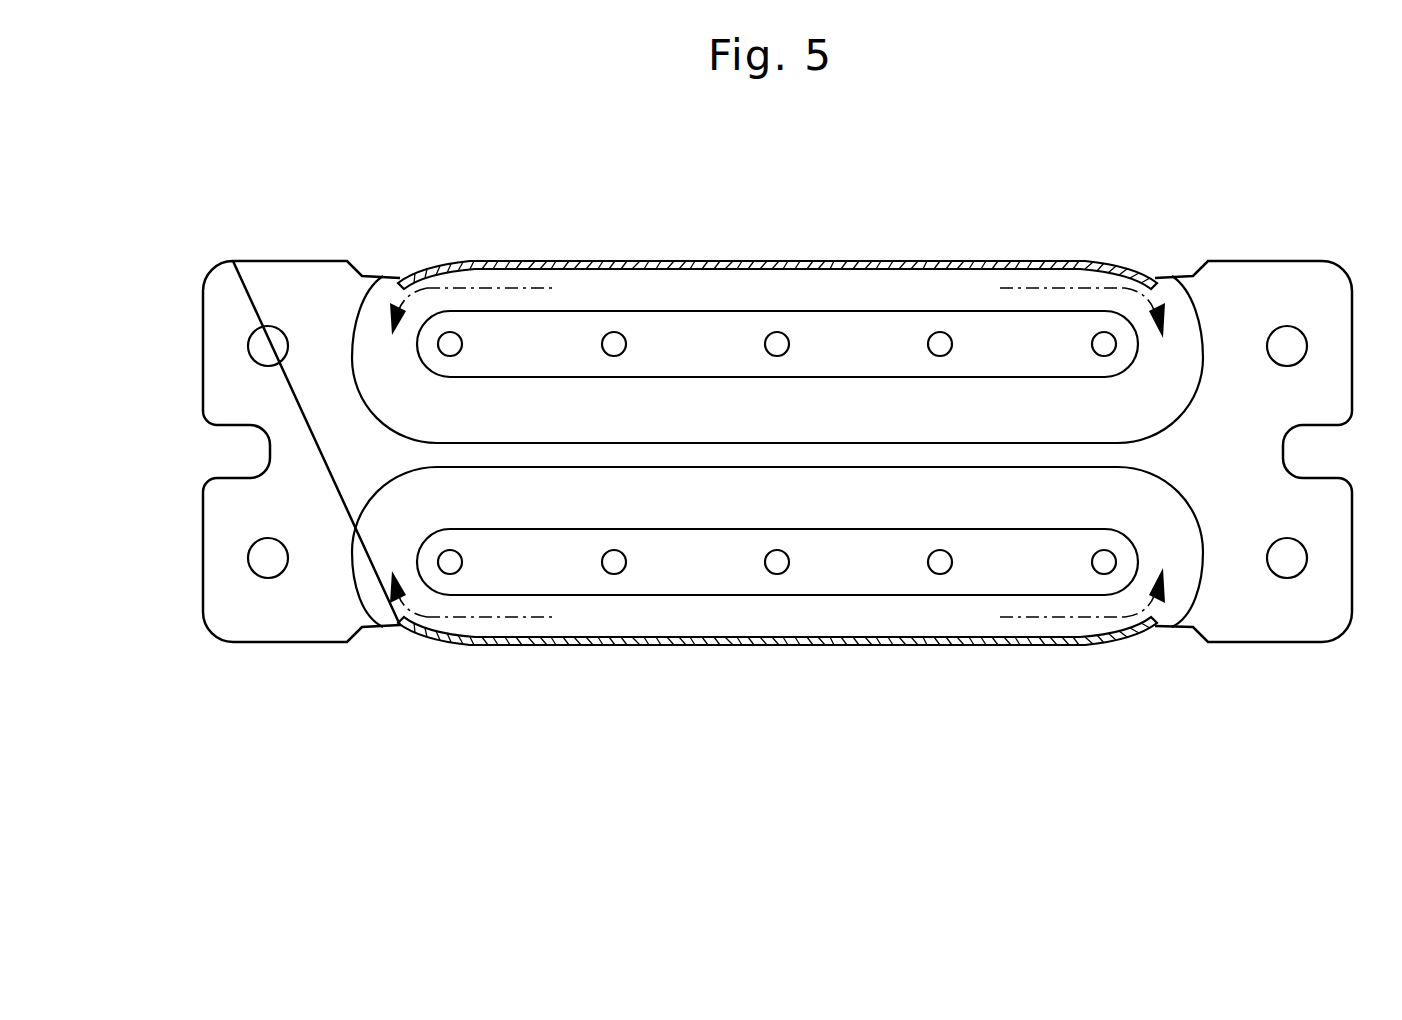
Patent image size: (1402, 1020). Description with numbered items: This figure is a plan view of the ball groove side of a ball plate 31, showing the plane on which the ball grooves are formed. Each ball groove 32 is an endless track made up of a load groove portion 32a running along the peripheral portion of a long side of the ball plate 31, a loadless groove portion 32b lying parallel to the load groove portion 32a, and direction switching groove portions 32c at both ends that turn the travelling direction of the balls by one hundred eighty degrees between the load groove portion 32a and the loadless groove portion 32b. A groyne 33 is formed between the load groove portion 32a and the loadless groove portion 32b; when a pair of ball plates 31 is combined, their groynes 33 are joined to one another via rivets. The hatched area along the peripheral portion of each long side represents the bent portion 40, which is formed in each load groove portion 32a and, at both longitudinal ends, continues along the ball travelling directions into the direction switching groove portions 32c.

The ball plate 31 is at (1307, 260).
The ball groove 32 is at (510, 289).
The load groove portion 32a is at (868, 262).
The loadless groove portion 32b is at (1048, 398).
The direction switching groove portion 32c is at (365, 328).
The groyne 33 is at (682, 328).
The bent portion 40 is at (975, 260).